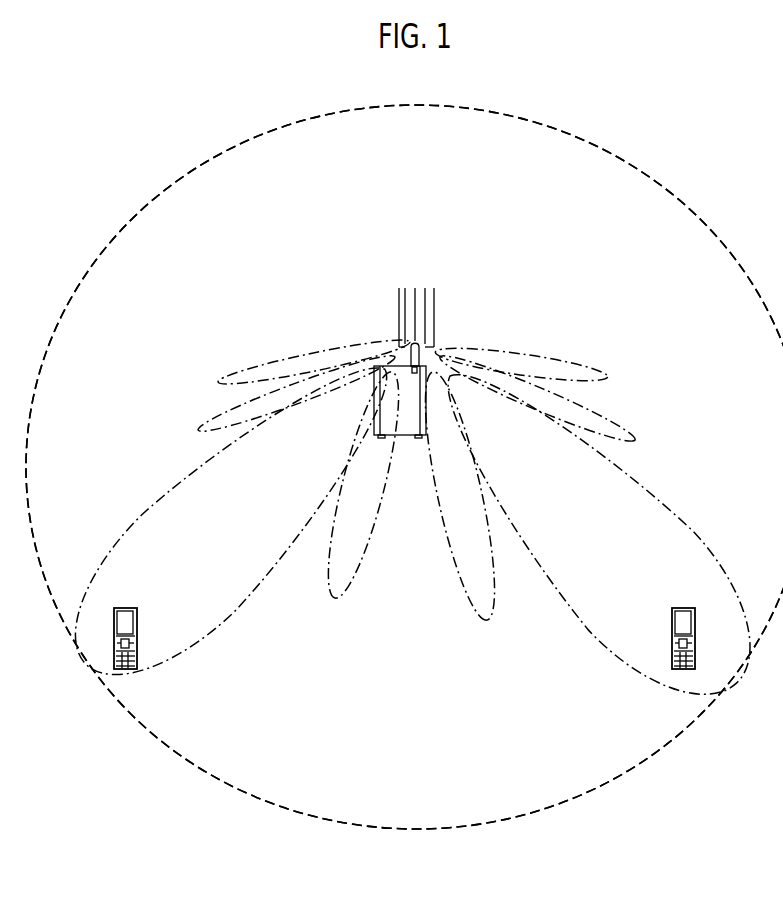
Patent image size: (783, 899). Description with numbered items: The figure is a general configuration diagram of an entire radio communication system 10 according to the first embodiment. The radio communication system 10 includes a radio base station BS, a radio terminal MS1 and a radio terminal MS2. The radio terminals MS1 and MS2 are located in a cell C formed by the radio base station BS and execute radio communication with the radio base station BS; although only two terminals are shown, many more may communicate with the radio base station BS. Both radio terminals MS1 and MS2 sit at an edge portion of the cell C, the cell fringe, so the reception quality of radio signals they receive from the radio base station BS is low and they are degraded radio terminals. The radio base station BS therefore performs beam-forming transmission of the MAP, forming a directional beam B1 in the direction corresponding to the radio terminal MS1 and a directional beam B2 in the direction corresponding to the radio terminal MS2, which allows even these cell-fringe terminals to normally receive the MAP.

The radio communication system 10 is at (665, 125).
The cell C is at (688, 208).
The radio base station BS is at (428, 274).
The directional beam B1 is at (113, 547).
The directional beam B2 is at (684, 520).
The radio terminal MS1 is at (138, 619).
The radio terminal MS2 is at (686, 606).